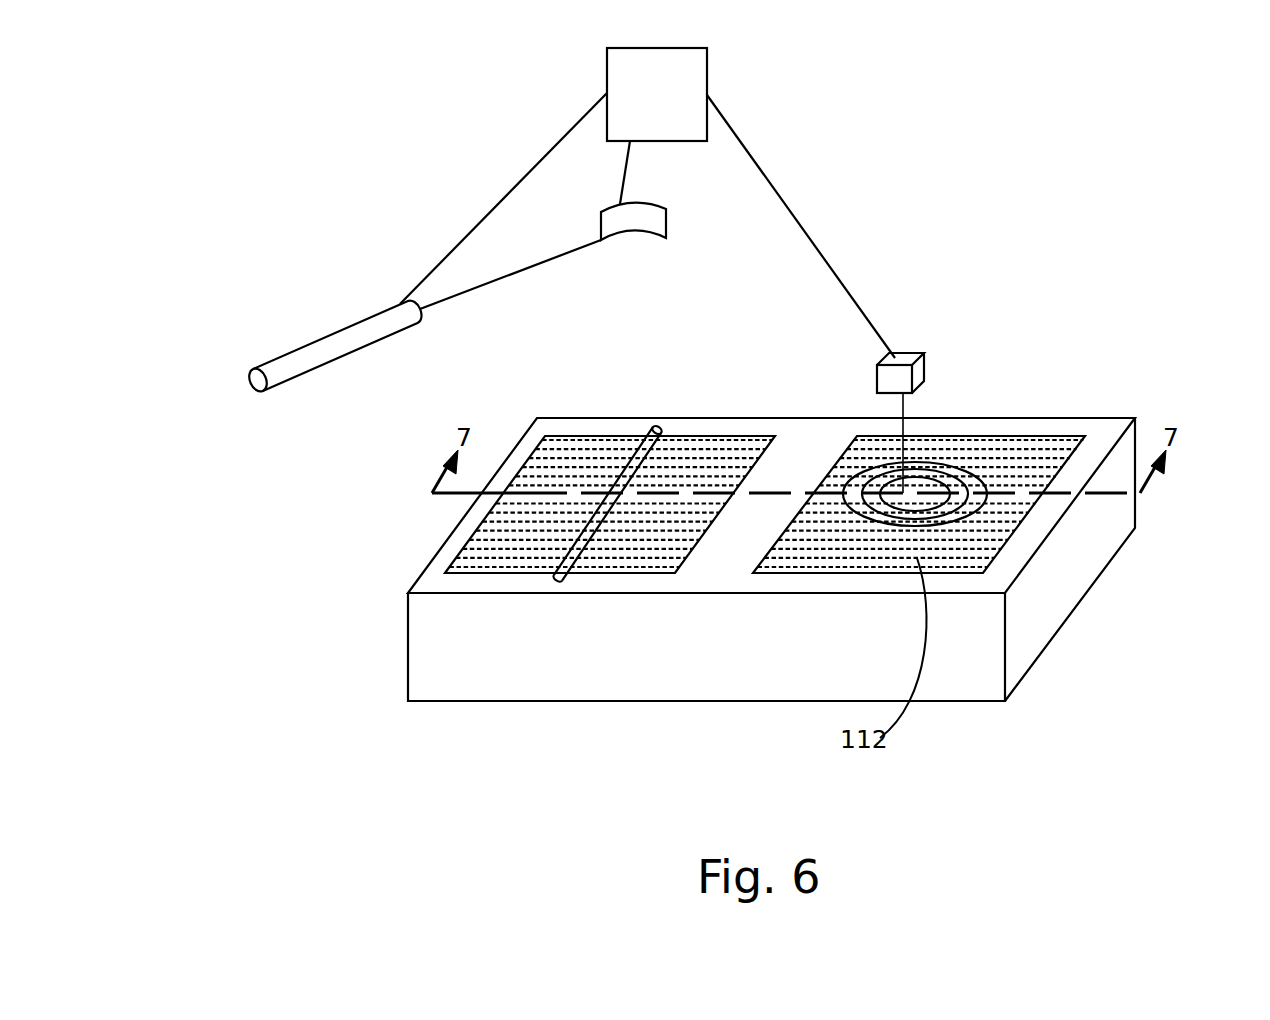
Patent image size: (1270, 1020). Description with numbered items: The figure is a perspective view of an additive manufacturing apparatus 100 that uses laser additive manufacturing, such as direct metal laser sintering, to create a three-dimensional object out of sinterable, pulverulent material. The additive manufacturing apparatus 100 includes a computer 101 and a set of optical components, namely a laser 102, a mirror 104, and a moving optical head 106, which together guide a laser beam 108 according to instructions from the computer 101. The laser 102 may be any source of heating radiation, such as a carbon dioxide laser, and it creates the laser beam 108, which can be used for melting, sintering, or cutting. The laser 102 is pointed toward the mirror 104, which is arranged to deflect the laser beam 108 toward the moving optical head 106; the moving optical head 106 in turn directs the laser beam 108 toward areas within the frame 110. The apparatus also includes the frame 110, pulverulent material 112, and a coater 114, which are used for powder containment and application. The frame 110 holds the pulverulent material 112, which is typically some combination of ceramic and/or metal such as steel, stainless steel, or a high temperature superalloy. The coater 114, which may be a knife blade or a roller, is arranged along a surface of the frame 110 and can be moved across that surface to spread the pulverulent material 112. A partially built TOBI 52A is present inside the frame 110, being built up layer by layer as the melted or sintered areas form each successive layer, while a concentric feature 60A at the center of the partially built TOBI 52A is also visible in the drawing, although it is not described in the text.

The additive manufacturing apparatus 100 is at (1134, 322).
The computer 101 is at (707, 70).
The laser 102 is at (312, 358).
The mirror 104 is at (637, 207).
The moving optical head 106 is at (903, 356).
The laser beam 108 is at (507, 278).
The frame 110 is at (498, 581).
The pulverulent material 112 is at (636, 553).
The coater 114 is at (656, 428).
The partially built TOBI 52A is at (958, 468).
The center electrode 60A is at (937, 512).